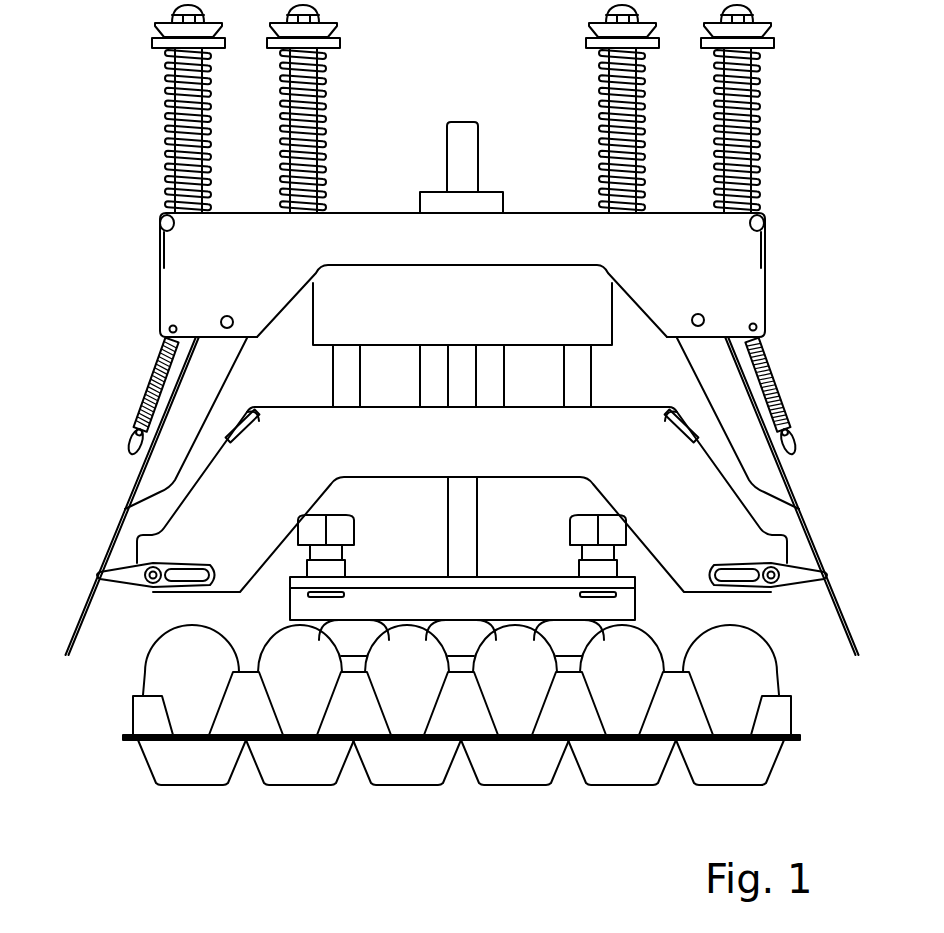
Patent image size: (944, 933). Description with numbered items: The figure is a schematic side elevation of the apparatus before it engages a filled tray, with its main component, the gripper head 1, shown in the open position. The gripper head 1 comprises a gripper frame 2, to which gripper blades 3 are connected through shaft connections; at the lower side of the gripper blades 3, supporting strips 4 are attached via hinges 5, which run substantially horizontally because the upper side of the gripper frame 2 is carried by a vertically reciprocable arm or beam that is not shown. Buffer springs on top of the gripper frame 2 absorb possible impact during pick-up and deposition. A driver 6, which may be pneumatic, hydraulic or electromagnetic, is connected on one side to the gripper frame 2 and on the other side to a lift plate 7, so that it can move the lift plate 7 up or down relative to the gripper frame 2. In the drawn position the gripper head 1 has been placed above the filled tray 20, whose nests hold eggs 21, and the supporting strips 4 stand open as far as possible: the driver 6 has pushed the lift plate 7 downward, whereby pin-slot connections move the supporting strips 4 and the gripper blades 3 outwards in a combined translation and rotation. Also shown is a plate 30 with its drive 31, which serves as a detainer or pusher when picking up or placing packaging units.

The gripper head 1 is at (820, 167).
The gripper frame 2 is at (740, 297).
The gripper blades 3 is at (798, 487).
The supporting strips 4 is at (846, 618).
The hinges 5 is at (88, 578).
The driver 6 is at (362, 297).
The lift plate 7 is at (225, 522).
The tray 20 is at (755, 765).
The eggs 21 is at (755, 673).
The plate 30 is at (403, 607).
The drive 31 is at (480, 528).